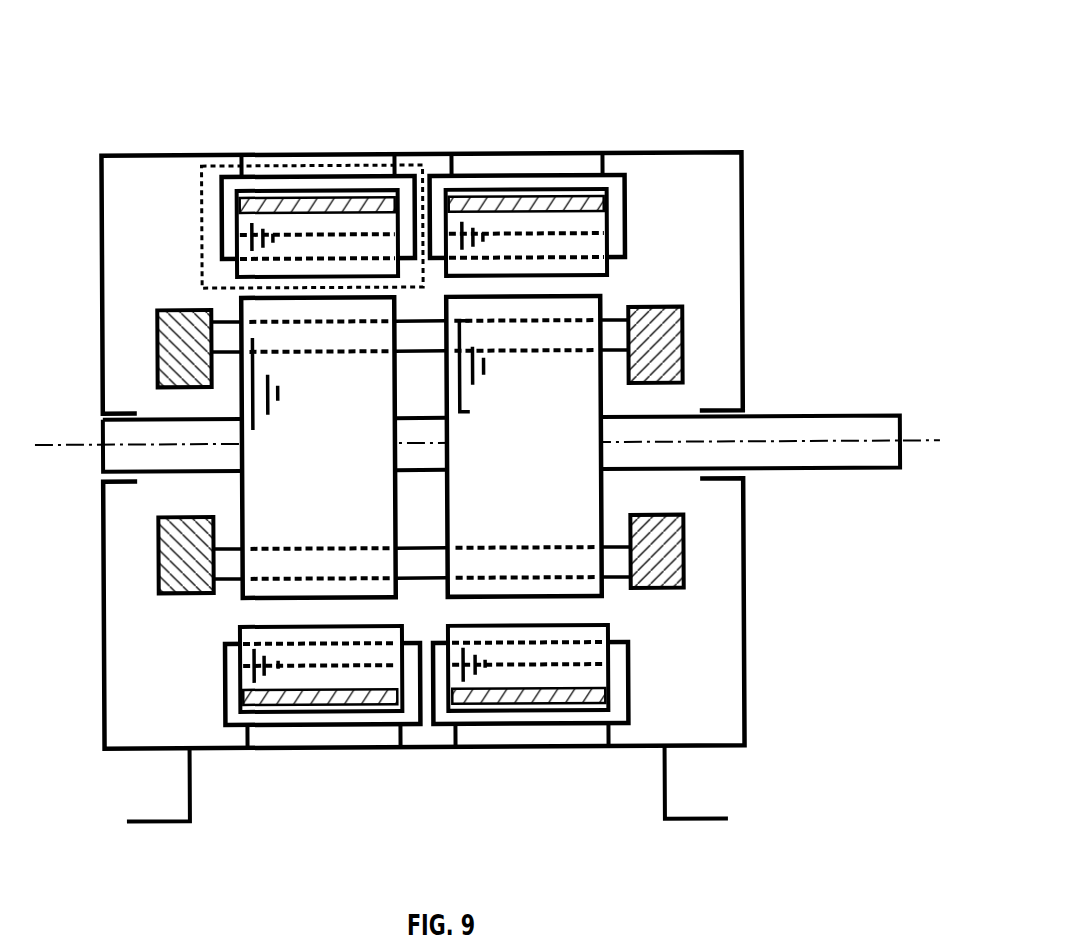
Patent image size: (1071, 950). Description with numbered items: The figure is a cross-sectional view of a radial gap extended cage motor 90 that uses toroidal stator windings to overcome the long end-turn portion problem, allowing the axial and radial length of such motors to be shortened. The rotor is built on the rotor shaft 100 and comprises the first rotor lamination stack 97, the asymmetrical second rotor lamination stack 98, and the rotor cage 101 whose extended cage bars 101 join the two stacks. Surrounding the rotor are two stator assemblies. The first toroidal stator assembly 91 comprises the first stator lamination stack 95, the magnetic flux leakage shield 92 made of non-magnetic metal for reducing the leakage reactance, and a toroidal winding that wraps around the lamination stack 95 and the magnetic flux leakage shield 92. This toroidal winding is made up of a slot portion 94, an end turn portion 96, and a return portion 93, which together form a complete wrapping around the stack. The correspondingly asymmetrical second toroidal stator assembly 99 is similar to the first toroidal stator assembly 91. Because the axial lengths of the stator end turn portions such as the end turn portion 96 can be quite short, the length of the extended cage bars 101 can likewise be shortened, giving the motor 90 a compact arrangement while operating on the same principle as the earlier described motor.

The radial gap extended cage motor 90 is at (687, 62).
The first toroidal stator assembly 91 is at (213, 164).
The magnetic flux leakage shield 92 is at (258, 195).
The return portion 93 is at (298, 183).
The slot portion 94 is at (337, 233).
The first stator lamination stack 95 is at (374, 222).
The end turn portion 96 is at (233, 223).
The first rotor lamination stack 97 is at (322, 383).
The asymmetrical second rotor lamination stack 98 is at (527, 381).
The asymmetrical second toroidal stator assembly 99 is at (589, 155).
The rotor shaft 100 is at (825, 455).
The rotor cage 101 is at (617, 568).